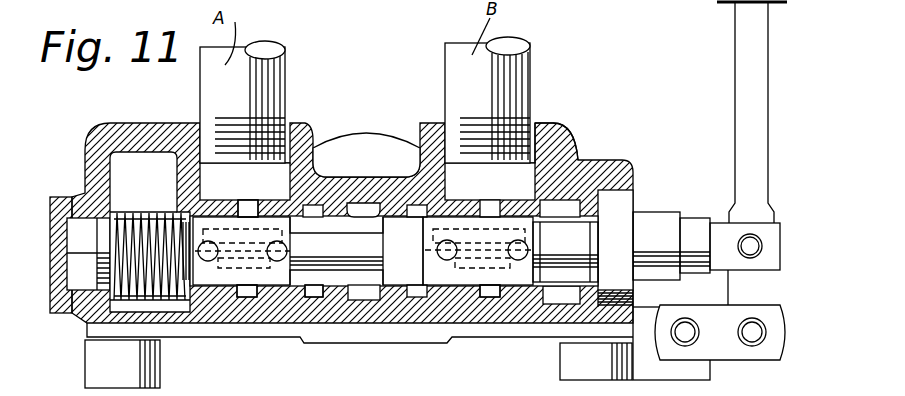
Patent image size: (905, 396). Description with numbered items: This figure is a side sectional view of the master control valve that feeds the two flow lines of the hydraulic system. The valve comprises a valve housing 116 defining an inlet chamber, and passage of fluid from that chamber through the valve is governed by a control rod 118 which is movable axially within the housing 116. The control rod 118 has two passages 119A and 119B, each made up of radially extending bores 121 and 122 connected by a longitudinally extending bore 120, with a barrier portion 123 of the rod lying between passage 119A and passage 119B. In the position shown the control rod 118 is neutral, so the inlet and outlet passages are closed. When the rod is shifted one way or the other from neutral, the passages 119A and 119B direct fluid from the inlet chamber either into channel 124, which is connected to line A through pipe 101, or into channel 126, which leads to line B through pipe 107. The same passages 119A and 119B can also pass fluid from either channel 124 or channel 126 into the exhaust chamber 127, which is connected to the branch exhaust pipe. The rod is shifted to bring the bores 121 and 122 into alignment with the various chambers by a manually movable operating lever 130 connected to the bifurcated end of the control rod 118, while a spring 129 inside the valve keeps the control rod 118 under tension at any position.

The pipe 101 is at (280, 75).
The pipe 107 is at (520, 72).
The valve housing 116 is at (545, 175).
The control rod 118 is at (657, 233).
The passage 119A is at (215, 262).
The passage 119B is at (437, 213).
The longitudinally extending bore 120 is at (238, 298).
The radially extending bore 121 is at (210, 260).
The radially extending bore 122 is at (280, 265).
The barrier portion 123 is at (333, 240).
The channel 124 is at (240, 197).
The channel 126 is at (562, 128).
The exhaust chamber 127 is at (160, 192).
The spring 129 is at (85, 327).
The operating lever 130 is at (742, 48).